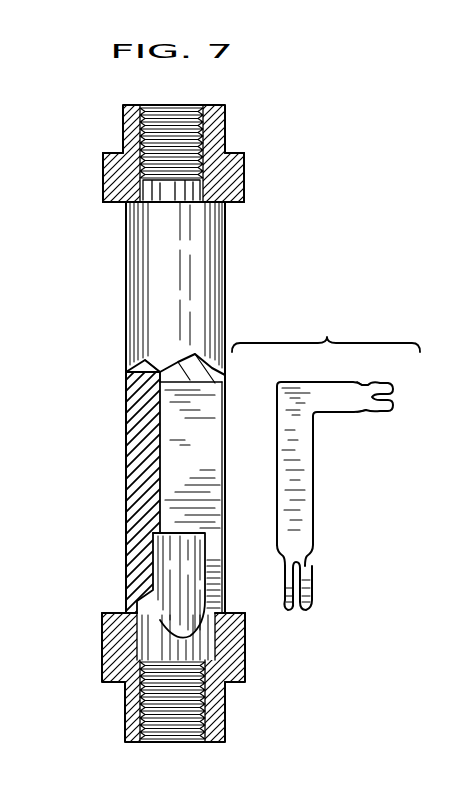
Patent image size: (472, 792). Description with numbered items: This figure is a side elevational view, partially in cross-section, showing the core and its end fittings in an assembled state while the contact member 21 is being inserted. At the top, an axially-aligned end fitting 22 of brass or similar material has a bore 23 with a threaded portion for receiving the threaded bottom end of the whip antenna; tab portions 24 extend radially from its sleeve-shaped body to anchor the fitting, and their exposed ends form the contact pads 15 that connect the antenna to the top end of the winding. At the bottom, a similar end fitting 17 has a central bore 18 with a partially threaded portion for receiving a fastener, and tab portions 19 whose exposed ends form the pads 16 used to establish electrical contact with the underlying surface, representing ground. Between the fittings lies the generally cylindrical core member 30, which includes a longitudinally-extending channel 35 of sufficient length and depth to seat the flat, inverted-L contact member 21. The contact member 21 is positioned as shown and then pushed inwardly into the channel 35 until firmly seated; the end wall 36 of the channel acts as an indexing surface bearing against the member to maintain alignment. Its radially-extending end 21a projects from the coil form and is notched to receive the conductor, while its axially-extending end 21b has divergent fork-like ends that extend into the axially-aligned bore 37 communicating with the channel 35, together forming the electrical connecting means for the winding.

The contact pads 15 is at (103, 177).
The contact pads 16 is at (111, 662).
The bottom end fitting 17 is at (226, 698).
The central bore 18 is at (148, 705).
The tab portions 19 is at (110, 641).
The contact member 21 is at (344, 496).
The radially-extending end 21a is at (378, 412).
The axially-extending end 21b is at (311, 584).
The top end fitting 22 is at (226, 128).
The bore 23 is at (144, 132).
The tab portions 24 is at (243, 159).
The core member 30 is at (154, 500).
The channel 35 is at (165, 430).
The end wall 36 is at (204, 386).
The bore 37 is at (195, 584).